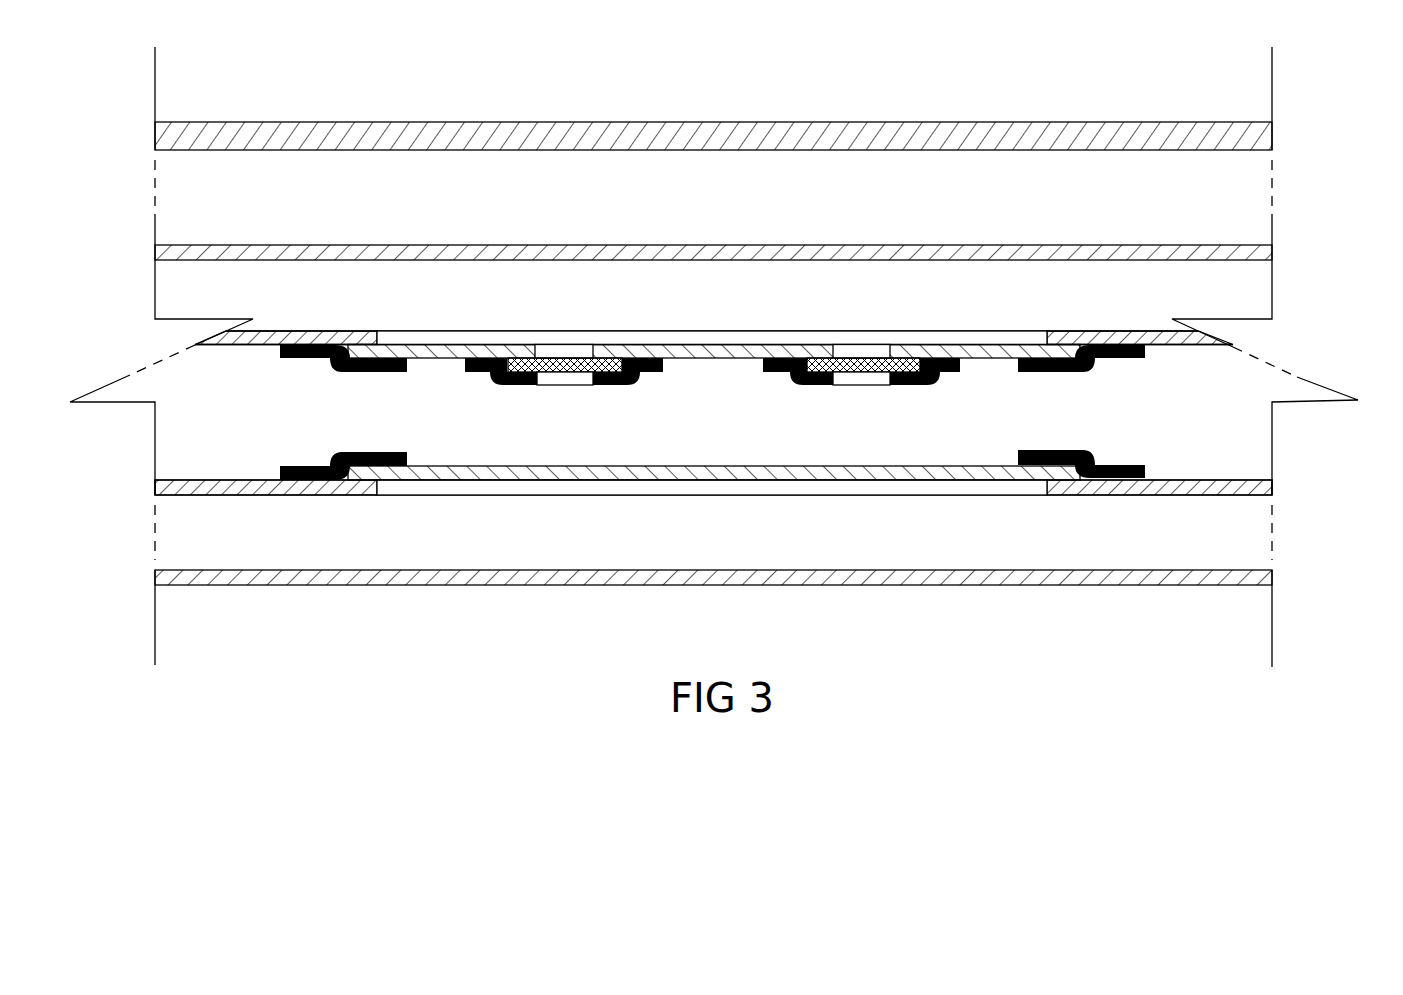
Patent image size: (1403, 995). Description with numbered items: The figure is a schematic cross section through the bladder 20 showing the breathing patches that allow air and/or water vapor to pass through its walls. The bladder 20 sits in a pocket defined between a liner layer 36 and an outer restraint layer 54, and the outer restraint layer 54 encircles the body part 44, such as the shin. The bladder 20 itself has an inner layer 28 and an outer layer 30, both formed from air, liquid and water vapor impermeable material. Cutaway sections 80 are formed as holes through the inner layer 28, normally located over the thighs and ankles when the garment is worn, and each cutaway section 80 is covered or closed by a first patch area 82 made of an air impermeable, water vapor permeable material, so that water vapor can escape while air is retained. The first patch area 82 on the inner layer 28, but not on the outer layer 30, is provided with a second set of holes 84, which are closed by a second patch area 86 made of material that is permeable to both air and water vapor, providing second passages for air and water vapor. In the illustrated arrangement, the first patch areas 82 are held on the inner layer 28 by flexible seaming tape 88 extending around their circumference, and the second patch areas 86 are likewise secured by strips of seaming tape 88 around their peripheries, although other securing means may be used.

The bladder 20 is at (1240, 503).
The inner layer 28 is at (258, 337).
The outer layer 30 is at (240, 487).
The liner layer 36 is at (332, 253).
The body part 44 is at (328, 135).
The outer restraint layer 54 is at (797, 578).
The cutaway section 80 is at (469, 335).
The first patch area 82 is at (712, 352).
The cutaway section 84 is at (558, 350).
The second patch area 86 is at (588, 367).
The seaming tape 88 is at (330, 362).